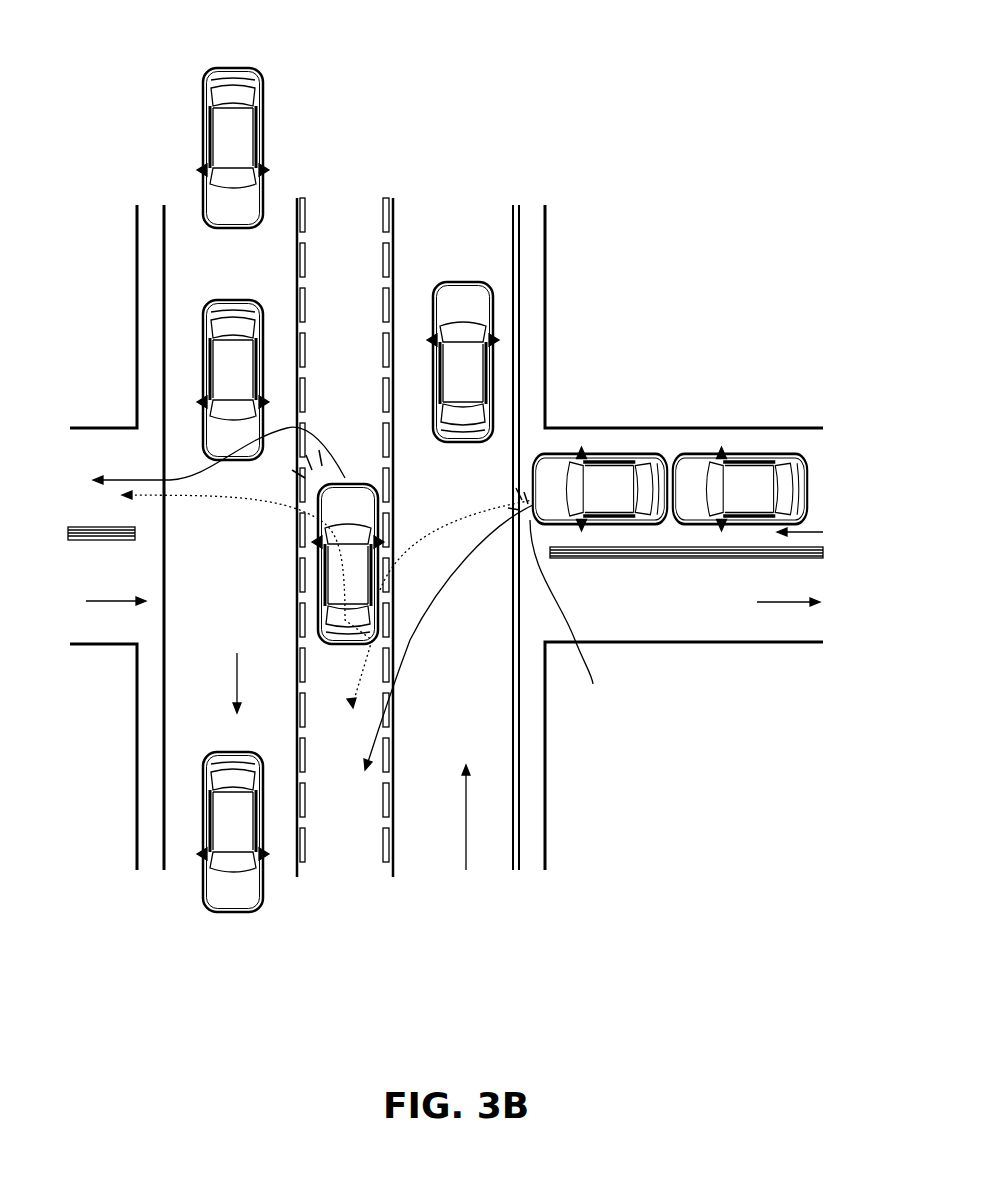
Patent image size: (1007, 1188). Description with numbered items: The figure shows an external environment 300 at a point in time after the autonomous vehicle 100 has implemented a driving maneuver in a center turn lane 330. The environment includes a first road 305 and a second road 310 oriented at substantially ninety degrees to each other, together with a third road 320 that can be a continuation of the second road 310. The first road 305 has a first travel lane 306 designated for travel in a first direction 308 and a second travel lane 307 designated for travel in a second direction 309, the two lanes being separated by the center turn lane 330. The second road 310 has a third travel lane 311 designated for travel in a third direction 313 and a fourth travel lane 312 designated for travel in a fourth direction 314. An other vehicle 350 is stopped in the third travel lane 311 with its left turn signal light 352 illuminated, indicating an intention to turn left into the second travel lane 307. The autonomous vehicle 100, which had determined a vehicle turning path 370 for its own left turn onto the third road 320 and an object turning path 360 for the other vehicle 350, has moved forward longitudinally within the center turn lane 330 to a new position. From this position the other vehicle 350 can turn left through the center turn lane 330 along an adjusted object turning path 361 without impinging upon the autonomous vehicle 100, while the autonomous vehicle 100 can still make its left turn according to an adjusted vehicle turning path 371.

The external environment 300 is at (438, 31).
The third road 320 is at (98, 414).
The adjusted vehicle turning path 371 is at (178, 478).
The autonomous vehicle 100 is at (346, 483).
The object turning path 360 is at (420, 533).
The vehicle turning path 370 is at (232, 497).
The second road 310 is at (668, 410).
The third travel lane 311 is at (813, 440).
The third direction 313 is at (795, 440).
The other vehicle 350 is at (620, 440).
The adjusted object turning path 361 is at (466, 560).
The left turn signal light 352 is at (569, 615).
The fourth travel lane 312 is at (688, 644).
The fourth direction 314 is at (783, 604).
The second direction 309 is at (237, 688).
The second travel lane 307 is at (178, 820).
The center turn lane 330 is at (333, 828).
The first direction 308 is at (466, 830).
The first travel lane 306 is at (495, 815).
The first road 305 is at (503, 902).